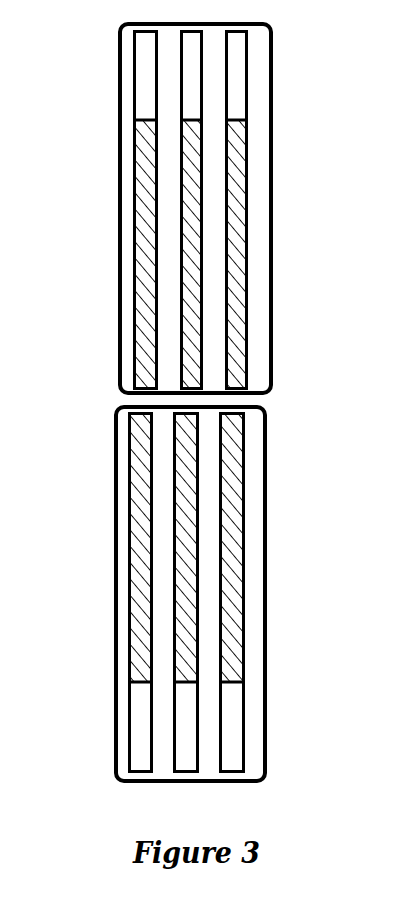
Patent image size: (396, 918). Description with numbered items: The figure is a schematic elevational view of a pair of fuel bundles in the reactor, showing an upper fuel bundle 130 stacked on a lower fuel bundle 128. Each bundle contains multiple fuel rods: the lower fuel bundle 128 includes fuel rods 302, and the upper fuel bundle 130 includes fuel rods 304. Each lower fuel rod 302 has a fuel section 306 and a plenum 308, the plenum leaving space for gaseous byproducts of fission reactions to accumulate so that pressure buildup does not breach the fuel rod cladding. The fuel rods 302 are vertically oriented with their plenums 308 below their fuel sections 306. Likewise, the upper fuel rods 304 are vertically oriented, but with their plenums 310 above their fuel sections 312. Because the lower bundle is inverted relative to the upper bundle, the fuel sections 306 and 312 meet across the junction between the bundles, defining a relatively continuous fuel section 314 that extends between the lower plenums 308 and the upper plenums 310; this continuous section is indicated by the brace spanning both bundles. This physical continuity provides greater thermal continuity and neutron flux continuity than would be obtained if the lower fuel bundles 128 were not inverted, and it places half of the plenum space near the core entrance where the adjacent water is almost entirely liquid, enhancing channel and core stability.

The continuous fuel section 314 is at (283, 123).
The upper fuel bundle 130 is at (118, 240).
The plenum 310 is at (147, 85).
The fuel rod 304 is at (133, 185).
The fuel section 312 is at (135, 312).
The lower fuel bundle 128 is at (116, 542).
The fuel section 306 is at (145, 486).
The fuel rod 302 is at (133, 614).
The plenum 308 is at (138, 722).